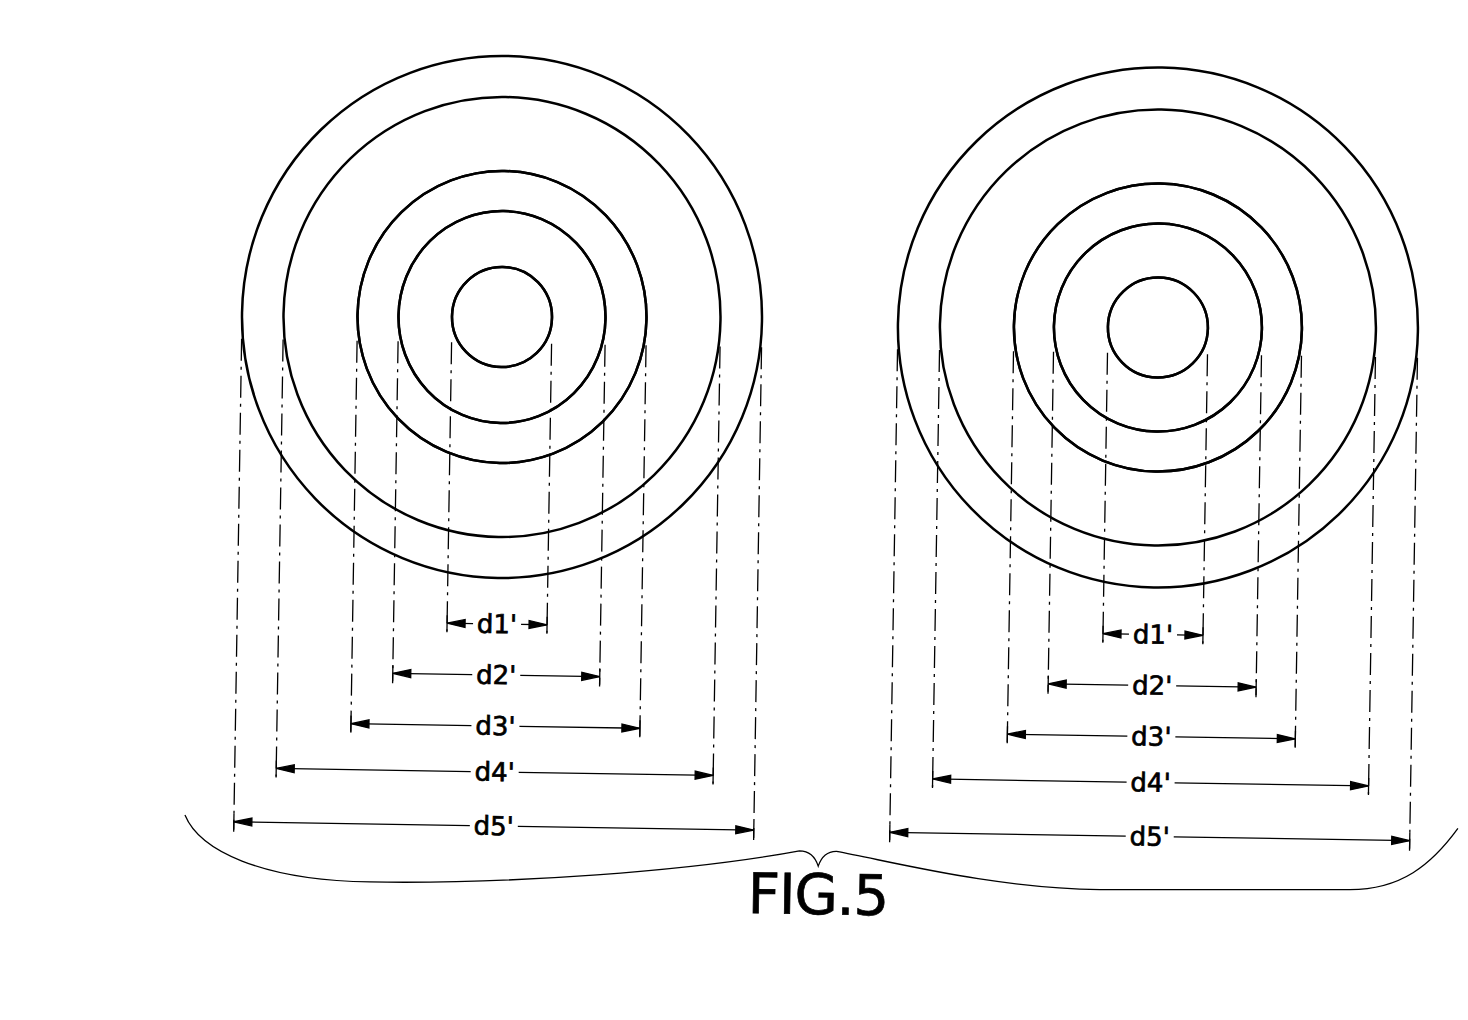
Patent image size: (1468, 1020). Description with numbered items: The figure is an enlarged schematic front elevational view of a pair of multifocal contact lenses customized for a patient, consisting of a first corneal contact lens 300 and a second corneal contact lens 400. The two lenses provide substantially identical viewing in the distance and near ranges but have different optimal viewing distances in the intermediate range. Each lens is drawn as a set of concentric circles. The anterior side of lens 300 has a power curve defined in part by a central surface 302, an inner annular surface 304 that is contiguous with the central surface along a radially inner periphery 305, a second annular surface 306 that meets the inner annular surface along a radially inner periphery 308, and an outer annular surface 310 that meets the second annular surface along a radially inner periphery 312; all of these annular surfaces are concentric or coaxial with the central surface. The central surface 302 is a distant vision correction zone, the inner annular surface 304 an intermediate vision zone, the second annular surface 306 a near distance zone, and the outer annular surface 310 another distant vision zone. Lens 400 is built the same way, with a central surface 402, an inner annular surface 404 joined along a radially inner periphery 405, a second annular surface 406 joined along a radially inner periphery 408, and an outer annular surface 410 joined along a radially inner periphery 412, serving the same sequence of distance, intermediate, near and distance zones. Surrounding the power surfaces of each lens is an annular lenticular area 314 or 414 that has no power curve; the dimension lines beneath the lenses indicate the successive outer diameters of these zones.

The first corneal contact lens 300 is at (687, 100).
The central surface 302 is at (480, 313).
The inner annular surface 304 is at (438, 261).
The radially inner periphery 305 is at (458, 289).
The second annular surface 306 is at (418, 219).
The radially inner periphery 308 is at (428, 238).
The outer annular surface 310 is at (400, 160).
The radially inner periphery 312 is at (418, 197).
The annular lenticular area 314 is at (365, 112).
The second corneal contact lens 400 is at (1345, 97).
The central surface 402 is at (1137, 312).
The inner annular surface 404 is at (1096, 260).
The radially inner periphery 405 is at (1117, 288).
The second annular surface 406 is at (1074, 219).
The radially inner periphery 408 is at (1084, 239).
The outer annular surface 410 is at (1055, 159).
The radially inner periphery 412 is at (1073, 198).
The annular lenticular area 414 is at (1019, 110).